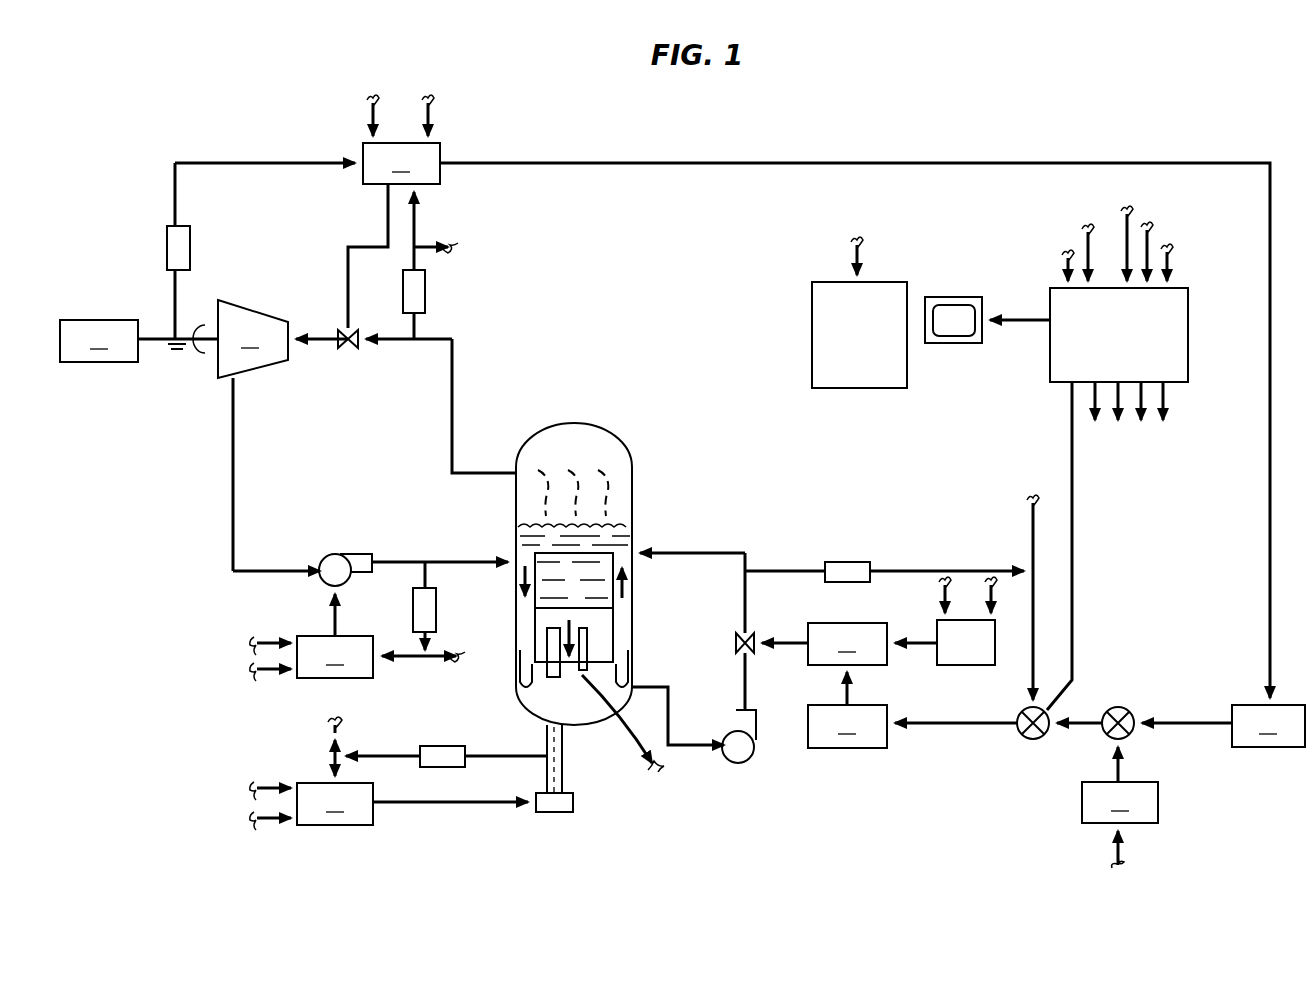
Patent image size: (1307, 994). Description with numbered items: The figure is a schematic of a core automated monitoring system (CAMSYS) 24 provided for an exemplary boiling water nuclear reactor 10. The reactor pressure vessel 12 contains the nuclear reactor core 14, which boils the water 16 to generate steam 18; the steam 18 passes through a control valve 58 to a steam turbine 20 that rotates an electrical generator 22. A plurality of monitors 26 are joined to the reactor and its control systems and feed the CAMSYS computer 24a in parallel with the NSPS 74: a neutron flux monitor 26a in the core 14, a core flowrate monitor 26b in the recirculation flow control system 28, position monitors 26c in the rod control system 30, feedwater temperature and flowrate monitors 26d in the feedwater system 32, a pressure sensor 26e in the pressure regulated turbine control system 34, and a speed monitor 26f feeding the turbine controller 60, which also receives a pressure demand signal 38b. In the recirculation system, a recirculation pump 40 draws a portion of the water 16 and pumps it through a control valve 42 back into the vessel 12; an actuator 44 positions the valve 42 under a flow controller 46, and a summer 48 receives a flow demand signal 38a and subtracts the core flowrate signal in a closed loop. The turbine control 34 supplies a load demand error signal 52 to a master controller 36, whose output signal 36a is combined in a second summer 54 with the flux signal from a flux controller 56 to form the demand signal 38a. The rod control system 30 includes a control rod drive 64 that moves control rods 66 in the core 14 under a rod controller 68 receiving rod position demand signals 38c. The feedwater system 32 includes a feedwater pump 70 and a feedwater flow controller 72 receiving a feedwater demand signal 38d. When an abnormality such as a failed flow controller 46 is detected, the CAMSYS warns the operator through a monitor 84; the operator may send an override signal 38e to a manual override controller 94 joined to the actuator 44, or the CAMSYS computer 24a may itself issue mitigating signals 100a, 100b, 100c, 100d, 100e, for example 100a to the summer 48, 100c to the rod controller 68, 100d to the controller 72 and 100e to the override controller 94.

The nuclear reactor 10 is at (598, 398).
The reactor pressure vessel 12 is at (542, 430).
The nuclear reactor core 14 is at (616, 592).
The boiling water 16 is at (514, 553).
The steam 18 is at (617, 484).
The steam turbine 20 is at (253, 435).
The electrical generator 22 is at (139, 341).
The core automated monitoring system (CAMSYS) 24 is at (1152, 389).
The CAMSYS computer 24a is at (1188, 308).
The sensors or monitors 26 is at (852, 253).
The neutron flux monitor 26a is at (590, 640).
The core flowrate monitor 26b is at (840, 561).
The position monitors 26c is at (439, 746).
The feedwater temperature and flowrate monitors 26d is at (435, 606).
The pressure sensor 26e is at (425, 286).
The speed monitor 26f is at (161, 251).
The recirculation flow control system (RFCS) 28 is at (838, 768).
The rod control system (RCS) 30 is at (440, 828).
The feedwater system 32 is at (298, 692).
The pressure regulated turbine control system 34 is at (325, 133).
The load or master controller 36 is at (1223, 744).
The output signal 36a is at (1207, 725).
The flow demand signal 38a is at (1080, 727).
The pressure demand signal 38b is at (431, 118).
The rod position demand signals 38c is at (266, 828).
The feedwater flowrate demand signal 38d is at (266, 638).
The override signal 38e is at (946, 598).
The recirculation pump 40 is at (726, 764).
The control valve 42 is at (734, 642).
The positioner or actuator 44 is at (847, 644).
The flow controller 46 is at (912, 710).
The summer 48 is at (1022, 742).
The load demand error signal 52 is at (747, 160).
The summer 54 is at (1116, 706).
The flux controller 56 is at (1120, 785).
The control valve 58 is at (354, 344).
The pressure regulated turbine controller 60 is at (307, 184).
The control rod drive 64 is at (562, 768).
The control rods 66 is at (548, 671).
The rod controller 68 is at (412, 771).
The feedwater pump 70 is at (338, 554).
The feedwater flow controller 72 is at (335, 636).
The NSPS 74 is at (856, 388).
The monitor 84 is at (950, 297).
The manual override controller 94 is at (958, 668).
The mitigating signal 100a is at (1070, 470).
The mitigating signal 100b is at (380, 110).
The mitigating signal 100c is at (262, 784).
The mitigating signal 100d is at (256, 672).
The override signal 100e is at (988, 578).